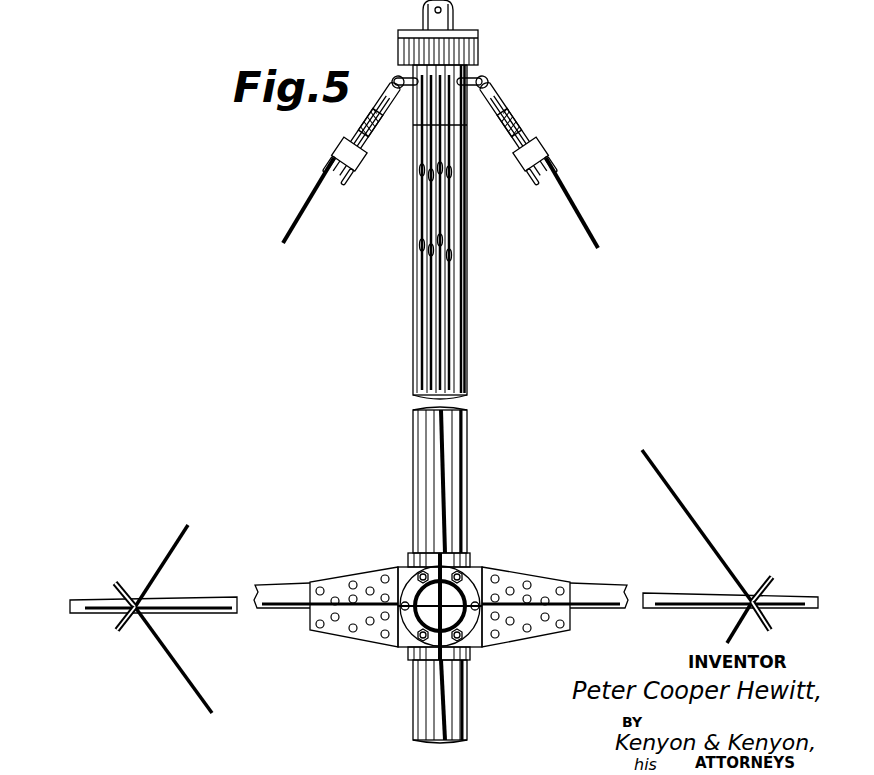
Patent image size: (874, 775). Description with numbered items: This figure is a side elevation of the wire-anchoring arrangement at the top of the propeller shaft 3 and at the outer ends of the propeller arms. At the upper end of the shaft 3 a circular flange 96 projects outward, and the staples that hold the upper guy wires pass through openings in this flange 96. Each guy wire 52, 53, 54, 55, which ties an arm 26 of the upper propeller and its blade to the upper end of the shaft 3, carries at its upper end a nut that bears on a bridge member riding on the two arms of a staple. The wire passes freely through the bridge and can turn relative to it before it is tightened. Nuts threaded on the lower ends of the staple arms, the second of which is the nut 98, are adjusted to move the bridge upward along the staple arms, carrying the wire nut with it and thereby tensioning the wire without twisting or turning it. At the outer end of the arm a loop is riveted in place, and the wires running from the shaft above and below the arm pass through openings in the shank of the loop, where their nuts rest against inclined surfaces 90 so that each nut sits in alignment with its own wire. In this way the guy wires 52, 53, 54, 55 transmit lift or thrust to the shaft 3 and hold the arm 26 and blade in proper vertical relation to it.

The shaft 3 is at (467, 318).
The arm 26 is at (467, 590).
The guy wire 52 is at (422, 292).
The guy wire 53 is at (438, 315).
The guy wire 54 is at (443, 337).
The guy wire 55 is at (448, 355).
The inclined surfaces 90 is at (626, 10).
The circular flange 96 is at (473, 78).
The nut 98 is at (553, 162).